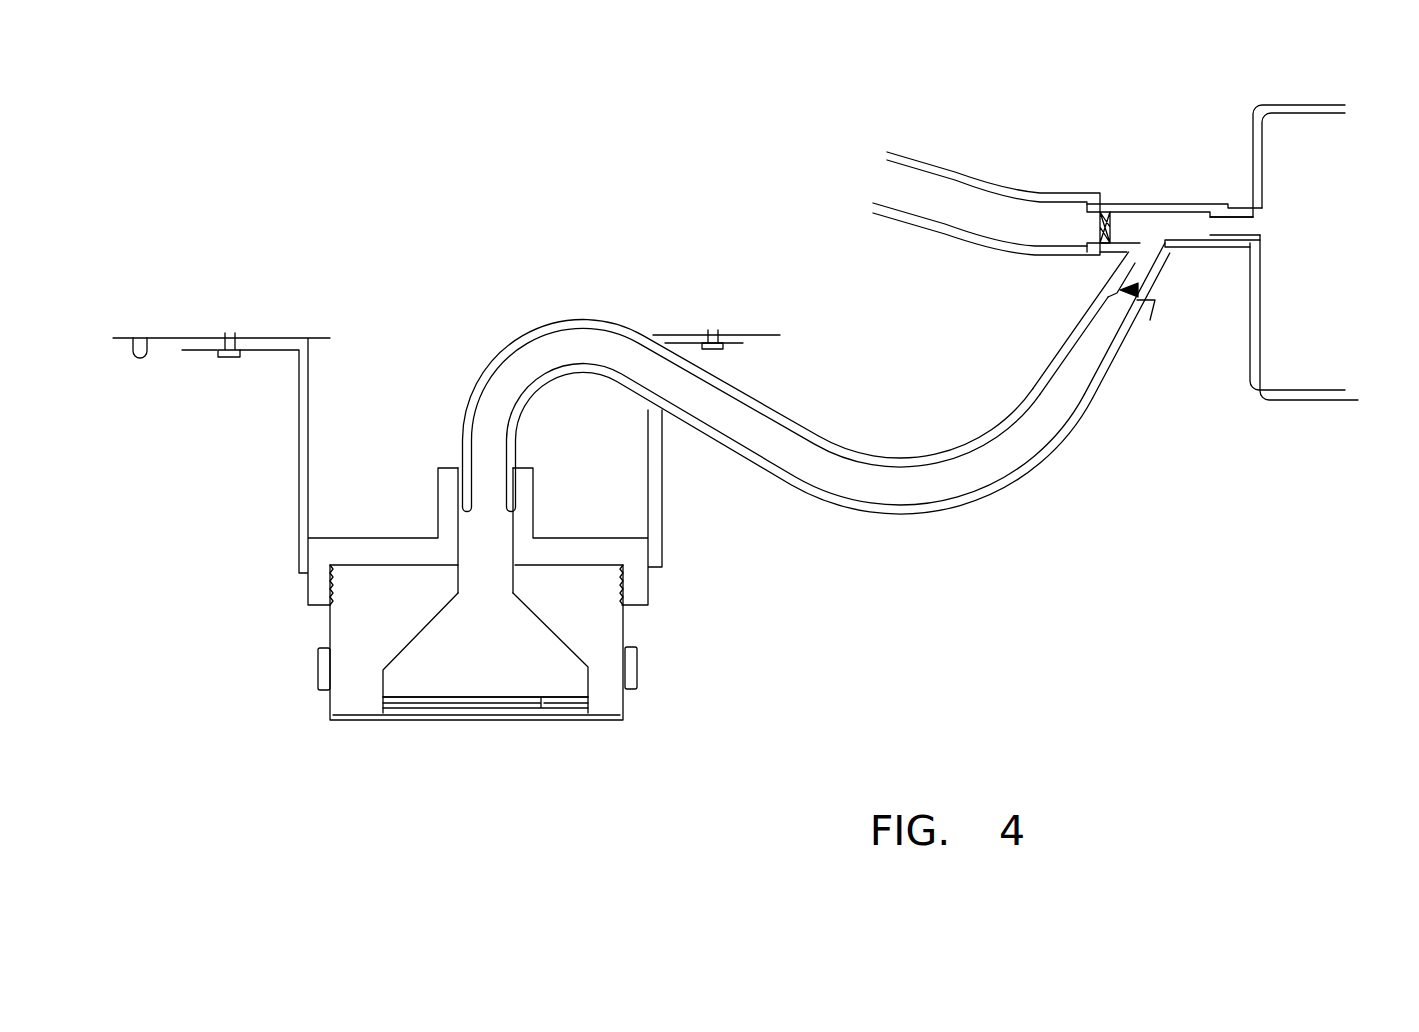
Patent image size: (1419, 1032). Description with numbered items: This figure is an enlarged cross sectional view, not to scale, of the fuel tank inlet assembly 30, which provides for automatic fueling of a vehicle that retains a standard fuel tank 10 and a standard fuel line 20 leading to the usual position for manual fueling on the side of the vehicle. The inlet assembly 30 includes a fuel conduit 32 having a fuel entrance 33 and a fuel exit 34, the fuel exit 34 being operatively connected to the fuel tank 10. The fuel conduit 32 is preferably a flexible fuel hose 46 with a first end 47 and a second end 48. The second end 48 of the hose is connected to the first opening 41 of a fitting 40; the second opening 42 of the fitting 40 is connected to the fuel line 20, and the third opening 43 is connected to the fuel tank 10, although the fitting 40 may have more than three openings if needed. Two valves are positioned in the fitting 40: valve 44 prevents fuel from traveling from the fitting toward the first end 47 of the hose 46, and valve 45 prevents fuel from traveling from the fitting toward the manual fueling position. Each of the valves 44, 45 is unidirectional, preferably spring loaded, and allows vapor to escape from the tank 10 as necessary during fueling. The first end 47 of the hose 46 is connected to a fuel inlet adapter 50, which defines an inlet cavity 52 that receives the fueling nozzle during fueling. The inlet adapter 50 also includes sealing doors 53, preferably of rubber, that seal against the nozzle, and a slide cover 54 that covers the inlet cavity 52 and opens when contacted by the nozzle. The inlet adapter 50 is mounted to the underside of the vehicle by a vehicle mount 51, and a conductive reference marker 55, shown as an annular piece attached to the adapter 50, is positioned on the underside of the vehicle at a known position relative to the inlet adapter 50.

The fuel tank 10 is at (1322, 133).
The fuel line 20 is at (902, 177).
The fuel tank inlet assembly 30 is at (852, 413).
The fuel conduit 32 is at (892, 480).
The fuel entrance 33 is at (503, 687).
The fuel exit 34 is at (1208, 232).
The fitting 40 is at (1130, 208).
The first opening 41 is at (1118, 307).
The second opening 42 is at (1088, 228).
The third opening 43 is at (1252, 226).
The valve 44 is at (1138, 289).
The valve 45 is at (1097, 195).
The flexible fuel hose 46 is at (848, 505).
The first end 47 is at (510, 488).
The second end 48 is at (1117, 363).
The fuel inlet adapter 50 is at (373, 632).
The vehicle mount 51 is at (303, 390).
The inlet cavity 52 is at (450, 647).
The sealing doors 53 is at (563, 702).
The slide cover 54 is at (610, 718).
The conductive reference marker 55 is at (143, 336).